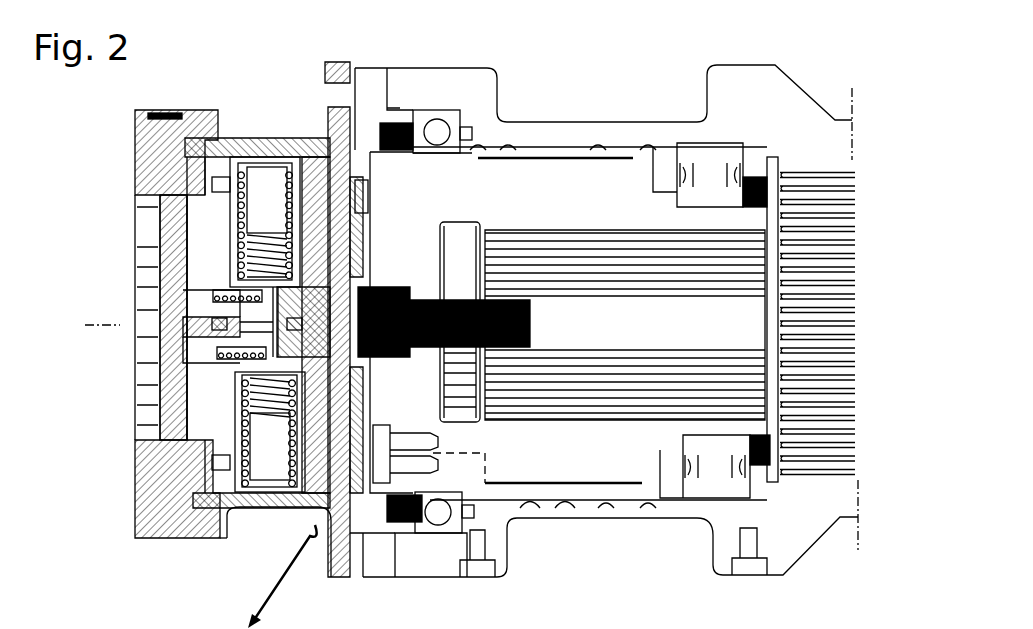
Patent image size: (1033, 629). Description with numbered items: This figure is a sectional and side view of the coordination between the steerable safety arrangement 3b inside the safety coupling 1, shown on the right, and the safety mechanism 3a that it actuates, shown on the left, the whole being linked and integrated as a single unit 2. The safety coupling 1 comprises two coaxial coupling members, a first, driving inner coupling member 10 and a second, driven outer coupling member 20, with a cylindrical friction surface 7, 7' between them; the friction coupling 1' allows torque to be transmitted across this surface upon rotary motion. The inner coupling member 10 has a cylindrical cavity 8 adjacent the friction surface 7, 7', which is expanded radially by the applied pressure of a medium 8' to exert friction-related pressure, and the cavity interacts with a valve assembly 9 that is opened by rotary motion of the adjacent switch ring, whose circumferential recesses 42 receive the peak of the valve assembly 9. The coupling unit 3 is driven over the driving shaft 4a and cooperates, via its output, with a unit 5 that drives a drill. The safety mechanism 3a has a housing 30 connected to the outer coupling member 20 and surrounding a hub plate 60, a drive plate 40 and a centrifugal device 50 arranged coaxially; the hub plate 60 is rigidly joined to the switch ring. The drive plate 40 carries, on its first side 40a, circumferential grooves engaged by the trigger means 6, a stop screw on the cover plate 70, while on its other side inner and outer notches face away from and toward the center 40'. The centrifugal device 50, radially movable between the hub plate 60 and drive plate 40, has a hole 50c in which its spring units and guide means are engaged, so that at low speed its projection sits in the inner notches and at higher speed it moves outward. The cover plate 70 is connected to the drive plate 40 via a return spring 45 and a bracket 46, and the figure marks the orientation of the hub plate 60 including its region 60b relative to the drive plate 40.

The safety coupling 1 is at (606, 301).
The friction coupling 1' is at (610, 539).
The single unit 2 is at (274, 292).
The coupling unit 3 is at (313, 455).
The safety mechanism 3a is at (177, 508).
The safety arrangement 3b is at (512, 537).
The driving shaft 4a is at (133, 360).
The unit 5 is at (885, 271).
The trigger means 6 is at (133, 187).
The cylindrical friction surface 7 is at (544, 328).
The cylindrical friction surface 7' is at (581, 332).
The cylindrical cavity 8 is at (584, 320).
The medium 8' is at (537, 523).
The valve assembly 9 is at (405, 435).
The inner coupling member 10 is at (421, 212).
The outer coupling member 20 is at (495, 97).
The housing 30 is at (278, 140).
The drive plate 40 is at (184, 325).
The center 40' is at (85, 304).
The first side 40a is at (125, 317).
The circumferential recesses 42 is at (385, 128).
The return spring 45 is at (217, 293).
The bracket 46 is at (173, 333).
The centrifugal device 50 is at (258, 443).
The hole 50c is at (247, 397).
The hub plate 60 is at (320, 177).
The end shield flange 60b is at (265, 147).
The cover plate 70 is at (160, 407).